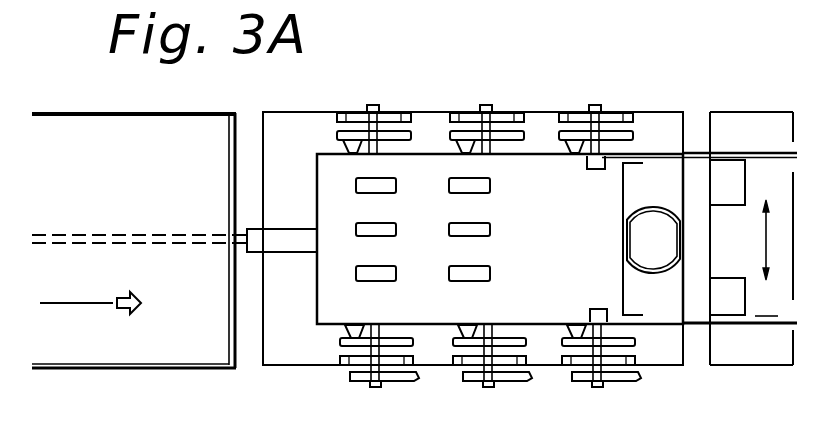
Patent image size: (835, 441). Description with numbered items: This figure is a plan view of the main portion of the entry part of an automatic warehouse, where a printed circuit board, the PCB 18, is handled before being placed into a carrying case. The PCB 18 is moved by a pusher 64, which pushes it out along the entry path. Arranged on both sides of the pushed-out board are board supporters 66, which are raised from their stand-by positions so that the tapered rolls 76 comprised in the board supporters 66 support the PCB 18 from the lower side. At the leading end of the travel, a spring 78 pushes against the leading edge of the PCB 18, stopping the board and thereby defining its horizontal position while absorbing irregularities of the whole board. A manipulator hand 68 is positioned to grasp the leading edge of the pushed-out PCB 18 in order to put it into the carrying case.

The PCB 18 is at (541, 335).
The pusher 64 is at (78, 230).
The board supporter 66 is at (362, 112).
The manipulator hand 68 is at (764, 326).
The tapered roll 76 is at (345, 148).
The spring 78 is at (653, 290).